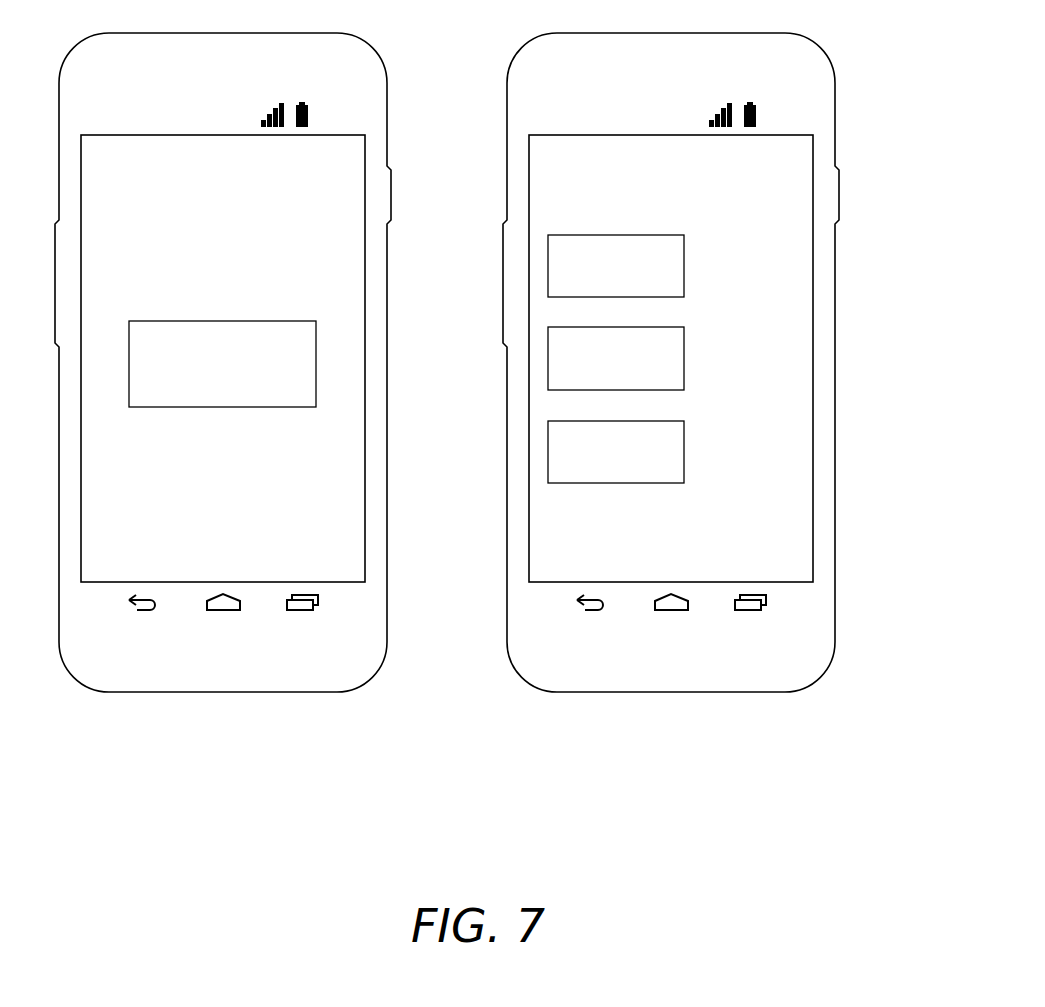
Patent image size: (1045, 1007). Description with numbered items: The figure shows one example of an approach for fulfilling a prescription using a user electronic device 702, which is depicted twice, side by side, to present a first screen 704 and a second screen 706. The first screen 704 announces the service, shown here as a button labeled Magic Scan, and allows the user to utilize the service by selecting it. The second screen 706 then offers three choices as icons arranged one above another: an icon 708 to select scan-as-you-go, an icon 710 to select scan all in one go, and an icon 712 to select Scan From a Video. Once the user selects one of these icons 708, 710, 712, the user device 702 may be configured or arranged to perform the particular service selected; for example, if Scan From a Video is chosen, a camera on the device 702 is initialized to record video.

The user electronic device 702 is at (220, 692).
The first screen 704 is at (412, 152).
The second screen 706 is at (726, 349).
The icon 708 is at (684, 265).
The icon 710 is at (684, 357).
The icon 712 is at (684, 450).